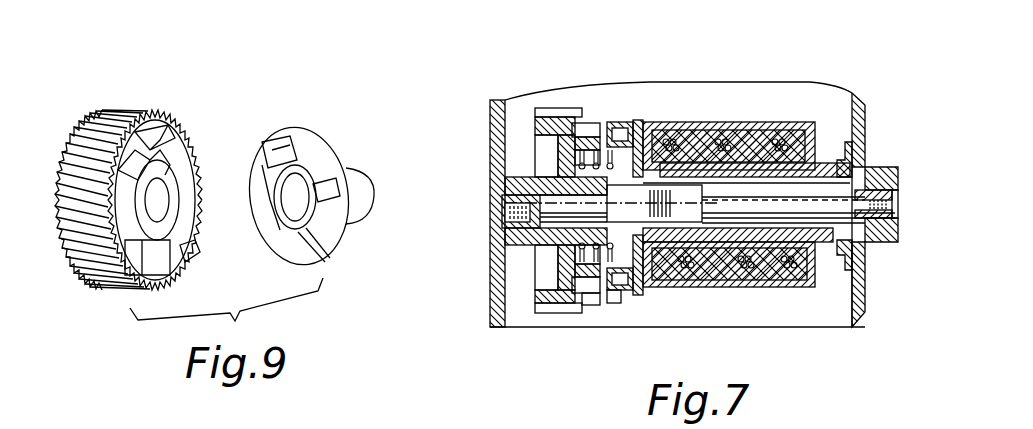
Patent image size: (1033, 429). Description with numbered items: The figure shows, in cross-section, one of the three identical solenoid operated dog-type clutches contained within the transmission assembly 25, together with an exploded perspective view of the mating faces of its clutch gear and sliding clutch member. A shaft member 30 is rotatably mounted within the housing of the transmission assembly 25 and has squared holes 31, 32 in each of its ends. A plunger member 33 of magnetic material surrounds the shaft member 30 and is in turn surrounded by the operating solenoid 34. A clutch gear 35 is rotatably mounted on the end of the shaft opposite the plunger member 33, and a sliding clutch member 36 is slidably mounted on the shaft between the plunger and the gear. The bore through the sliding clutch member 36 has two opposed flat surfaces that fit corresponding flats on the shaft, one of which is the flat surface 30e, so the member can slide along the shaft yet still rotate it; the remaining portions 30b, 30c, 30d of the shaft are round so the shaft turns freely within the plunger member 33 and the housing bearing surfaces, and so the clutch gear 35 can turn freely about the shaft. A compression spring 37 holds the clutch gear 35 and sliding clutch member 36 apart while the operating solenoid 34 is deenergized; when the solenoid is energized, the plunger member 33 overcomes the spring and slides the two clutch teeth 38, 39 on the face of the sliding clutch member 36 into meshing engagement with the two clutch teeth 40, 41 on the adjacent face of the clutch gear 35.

In FIG. 7, the transmission assembly 25 is at (858, 112).
In FIG. 7, the shaft member 30 is at (815, 225).
In FIG. 7, the round cross-section portion of shaft member 30b is at (550, 205).
In FIG. 7, the round cross-section portion of shaft member 30c is at (873, 175).
In FIG. 7, the round cross-section portion of shaft member 30d is at (870, 240).
In FIG. 7, the flat surface of shaft member 30e is at (705, 208).
In FIG. 7, the squared hole 31 is at (895, 206).
In FIG. 7, the squared hole 32 is at (512, 211).
In FIG. 7, the plunger member 33 is at (838, 168).
In FIG. 7, the operating solenoid 34 is at (705, 160).
In FIG. 9, the clutch gear 35 is at (108, 112).
In FIG. 7, the clutch gear 35 is at (545, 108).
In FIG. 9, the sliding clutch member 36 is at (330, 142).
In FIG. 7, the sliding clutch member 36 is at (627, 300).
In FIG. 7, the compression spring 37 is at (729, 274).
In FIG. 9, the clutch tooth 38 is at (276, 137).
In FIG. 7, the clutch tooth 38 is at (622, 135).
In FIG. 9, the clutch tooth 39 is at (333, 182).
In FIG. 7, the clutch tooth 39 is at (613, 303).
In FIG. 9, the clutch tooth 40 is at (168, 138).
In FIG. 7, the clutch tooth 40 is at (590, 128).
In FIG. 9, the clutch tooth 41 is at (188, 260).
In FIG. 7, the clutch tooth 41 is at (588, 307).